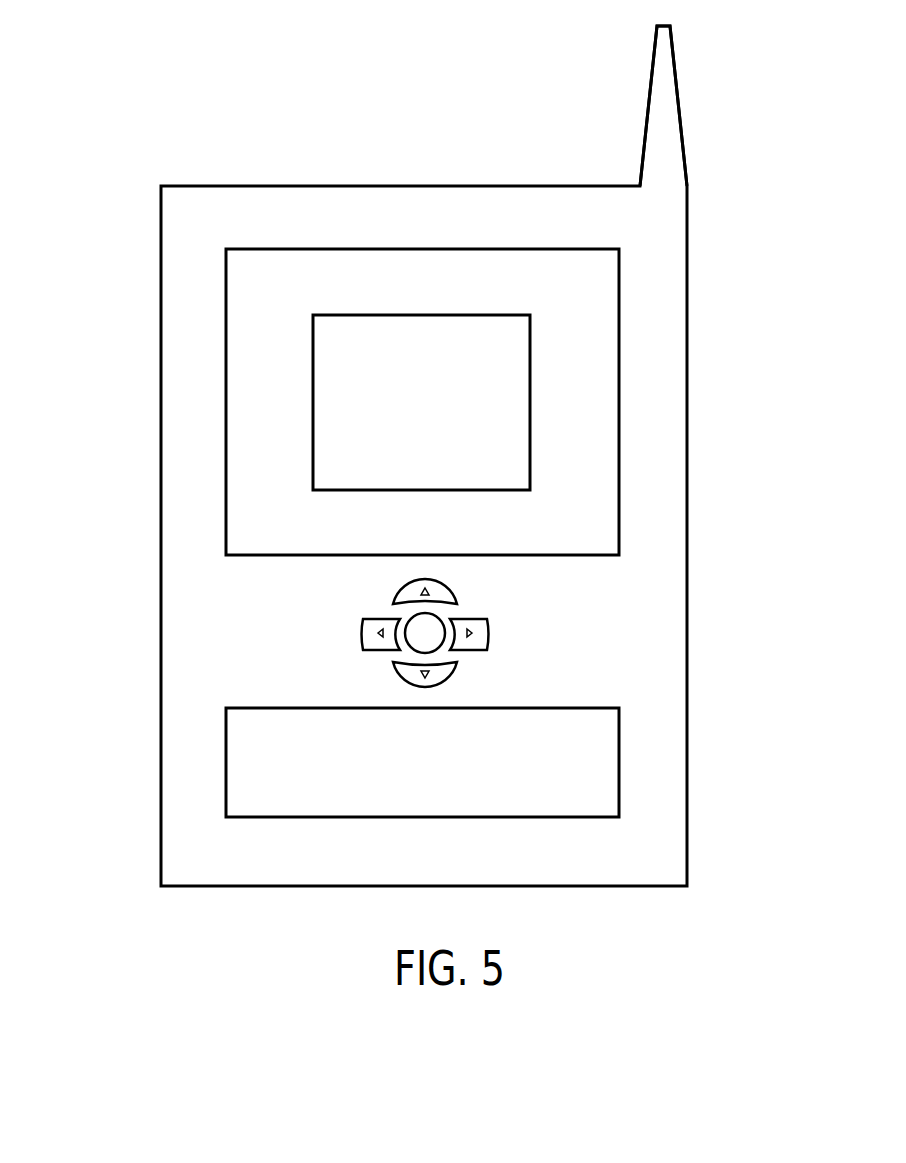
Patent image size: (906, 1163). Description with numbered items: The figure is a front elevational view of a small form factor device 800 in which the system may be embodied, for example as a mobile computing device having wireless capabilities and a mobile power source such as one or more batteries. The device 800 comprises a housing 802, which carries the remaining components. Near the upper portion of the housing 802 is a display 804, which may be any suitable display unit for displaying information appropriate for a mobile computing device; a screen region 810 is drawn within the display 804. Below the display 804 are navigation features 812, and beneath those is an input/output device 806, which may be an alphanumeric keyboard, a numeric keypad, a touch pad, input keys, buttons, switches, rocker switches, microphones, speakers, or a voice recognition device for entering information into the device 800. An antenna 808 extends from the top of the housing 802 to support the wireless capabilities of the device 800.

The small form factor device 800 is at (162, 127).
The housing 802 is at (160, 622).
The display 804 is at (619, 304).
The input/output (I/O) device 806 is at (619, 762).
The antenna 808 is at (648, 105).
The display screen 810 is at (423, 314).
The navigation features 812 is at (522, 633).